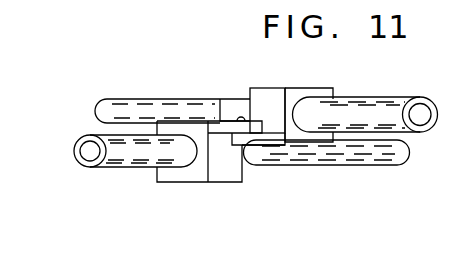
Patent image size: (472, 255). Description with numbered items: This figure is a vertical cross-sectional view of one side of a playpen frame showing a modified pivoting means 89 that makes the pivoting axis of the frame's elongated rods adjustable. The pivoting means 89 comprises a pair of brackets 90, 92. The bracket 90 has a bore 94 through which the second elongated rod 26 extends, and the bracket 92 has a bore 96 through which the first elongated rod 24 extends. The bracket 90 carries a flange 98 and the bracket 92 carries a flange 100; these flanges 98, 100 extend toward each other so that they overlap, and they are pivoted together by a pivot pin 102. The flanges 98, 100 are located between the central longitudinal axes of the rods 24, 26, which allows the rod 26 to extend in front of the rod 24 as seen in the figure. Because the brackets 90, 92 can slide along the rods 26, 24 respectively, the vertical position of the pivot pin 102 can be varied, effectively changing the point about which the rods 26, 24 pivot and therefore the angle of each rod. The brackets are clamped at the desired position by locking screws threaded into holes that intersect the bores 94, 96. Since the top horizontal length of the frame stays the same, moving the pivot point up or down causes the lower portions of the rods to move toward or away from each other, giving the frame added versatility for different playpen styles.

The modified pivoting means 89 is at (100, 91).
The flange 98 is at (221, 120).
The bracket 92 is at (266, 93).
The bore 96 is at (303, 106).
The first elongated rod 24 is at (386, 103).
The second elongated rod 26 is at (387, 157).
The bracket 90 is at (212, 183).
The pivot pin 102 is at (243, 145).
The flange 100 is at (273, 142).
The bore 94 is at (192, 168).